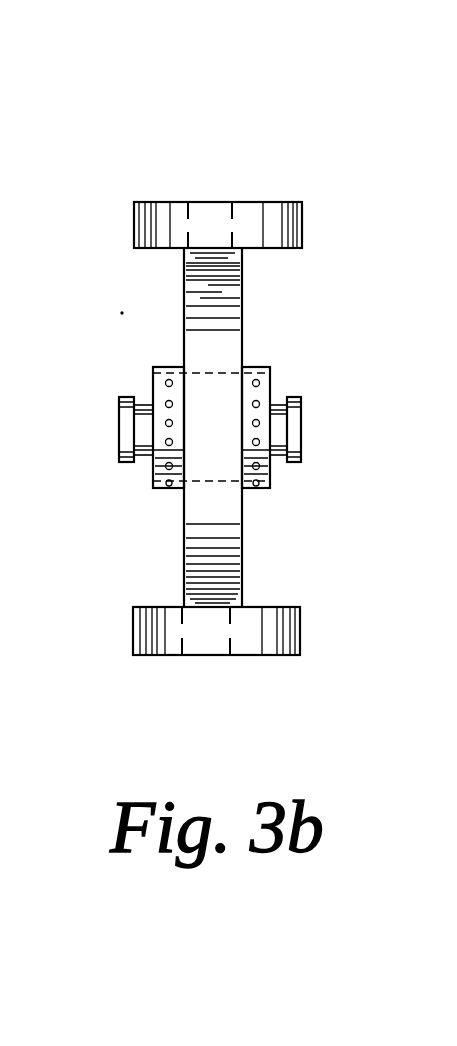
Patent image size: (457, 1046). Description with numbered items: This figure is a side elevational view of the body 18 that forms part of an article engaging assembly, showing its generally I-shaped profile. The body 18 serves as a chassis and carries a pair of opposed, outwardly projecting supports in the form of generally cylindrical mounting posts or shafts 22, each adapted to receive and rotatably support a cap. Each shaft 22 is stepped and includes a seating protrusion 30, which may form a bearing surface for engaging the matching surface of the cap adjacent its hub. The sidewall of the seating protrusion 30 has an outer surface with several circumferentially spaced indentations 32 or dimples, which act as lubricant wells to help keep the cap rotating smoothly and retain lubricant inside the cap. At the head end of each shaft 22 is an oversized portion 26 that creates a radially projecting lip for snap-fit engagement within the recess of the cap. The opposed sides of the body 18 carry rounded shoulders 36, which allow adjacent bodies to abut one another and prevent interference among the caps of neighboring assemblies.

The body 18 is at (215, 182).
The shoulders 36 is at (283, 207).
The shaft 22 is at (252, 455).
The seating protrusion 30 is at (268, 368).
The indentations 32 is at (247, 368).
The oversized portion 26 is at (288, 479).